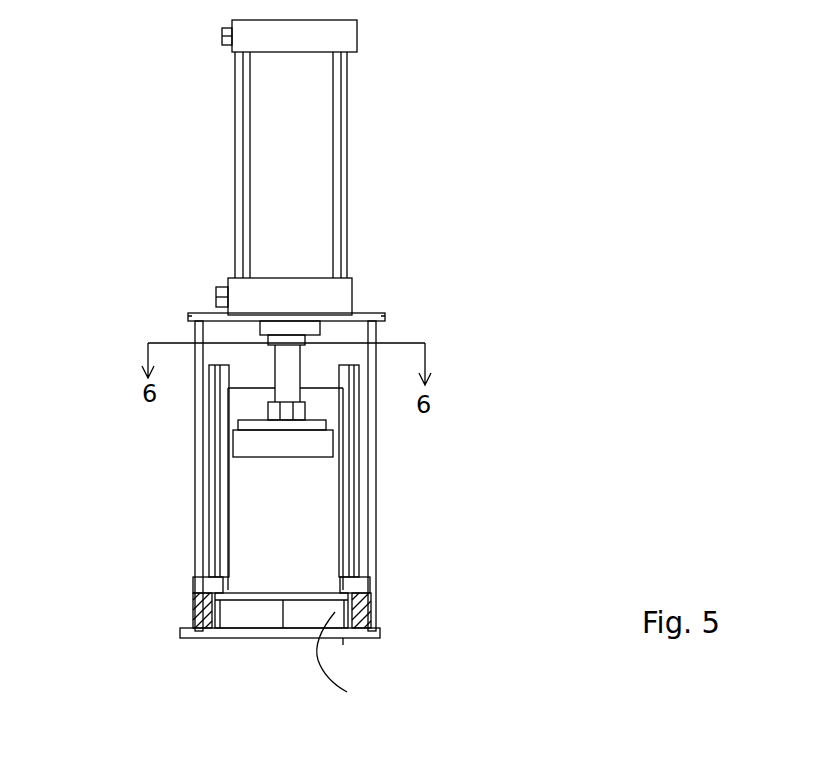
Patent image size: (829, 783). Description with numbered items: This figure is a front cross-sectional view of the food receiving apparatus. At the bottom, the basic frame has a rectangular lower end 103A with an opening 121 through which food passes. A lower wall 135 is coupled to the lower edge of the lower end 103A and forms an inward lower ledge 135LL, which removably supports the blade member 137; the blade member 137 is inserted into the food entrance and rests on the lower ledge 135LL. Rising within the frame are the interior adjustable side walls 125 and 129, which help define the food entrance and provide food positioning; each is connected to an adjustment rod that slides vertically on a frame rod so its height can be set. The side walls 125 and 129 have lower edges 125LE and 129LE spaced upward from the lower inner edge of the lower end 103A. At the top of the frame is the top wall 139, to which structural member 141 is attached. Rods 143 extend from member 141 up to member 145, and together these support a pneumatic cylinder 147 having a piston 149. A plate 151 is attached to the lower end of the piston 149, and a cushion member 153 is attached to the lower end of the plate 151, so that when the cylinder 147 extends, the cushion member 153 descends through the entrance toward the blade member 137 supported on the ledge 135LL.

The member 145 is at (357, 40).
The pneumatic cylinder 147 is at (303, 150).
The rods 143 is at (347, 210).
The structural member 141 is at (352, 300).
The top wall 139 is at (196, 312).
The piston 149 is at (300, 372).
The plate 151 is at (310, 420).
The cushion member 153 is at (232, 440).
The side wall 129 is at (205, 500).
The side wall 125 is at (353, 515).
The lower edge 129LE is at (198, 578).
The lower edge 125LE is at (365, 577).
The lower end 103A is at (195, 620).
The lower wall 135 is at (197, 640).
The opening 121 is at (293, 640).
The blade member 137 is at (356, 660).
The lower ledge 135LL is at (343, 645).